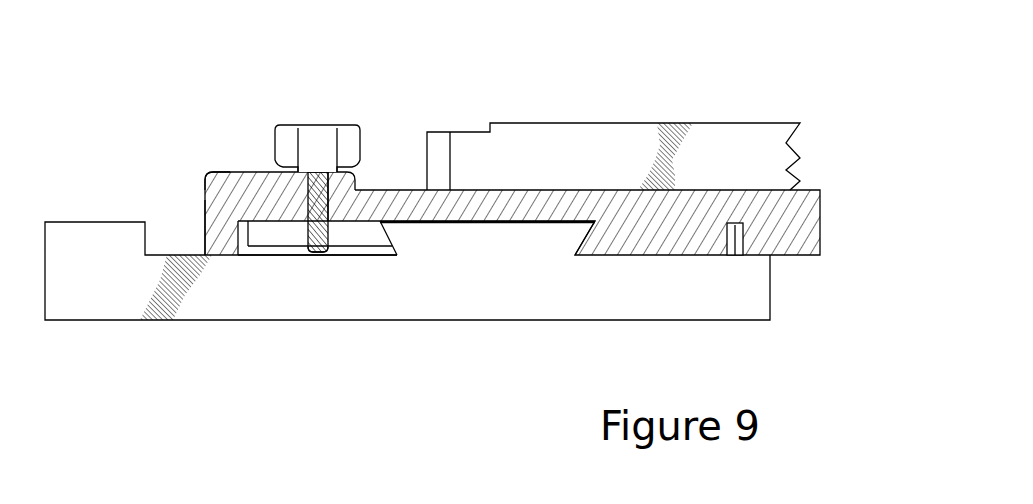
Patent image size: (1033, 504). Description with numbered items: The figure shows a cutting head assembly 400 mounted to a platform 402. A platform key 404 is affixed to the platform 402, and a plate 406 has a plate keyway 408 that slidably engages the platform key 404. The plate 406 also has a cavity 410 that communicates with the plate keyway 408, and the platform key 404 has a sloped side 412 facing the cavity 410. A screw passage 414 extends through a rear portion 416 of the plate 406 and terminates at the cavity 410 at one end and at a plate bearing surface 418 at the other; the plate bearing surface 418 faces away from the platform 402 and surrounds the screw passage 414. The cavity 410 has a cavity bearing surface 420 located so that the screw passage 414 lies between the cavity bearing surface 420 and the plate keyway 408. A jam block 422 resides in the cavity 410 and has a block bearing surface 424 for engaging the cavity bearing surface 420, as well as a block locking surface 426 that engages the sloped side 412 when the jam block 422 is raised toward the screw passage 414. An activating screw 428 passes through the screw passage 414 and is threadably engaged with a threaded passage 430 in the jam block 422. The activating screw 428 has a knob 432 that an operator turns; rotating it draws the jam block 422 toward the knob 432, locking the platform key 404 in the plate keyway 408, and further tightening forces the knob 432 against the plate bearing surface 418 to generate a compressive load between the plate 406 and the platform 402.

The cutting head assembly 400 is at (504, 73).
The platform 402 is at (105, 313).
The platform key 404 is at (470, 219).
The plate 406 is at (177, 182).
The plate keyway 408 is at (525, 220).
The cavity 410 is at (242, 247).
The sloped side 412 is at (400, 243).
The screw passage 414 is at (329, 200).
The rear portion 416 is at (207, 172).
The plate bearing surface 418 is at (303, 172).
The cavity bearing surface 420 is at (242, 232).
The jam block 422 is at (267, 258).
The block bearing surface 424 is at (248, 224).
The block locking surface 426 is at (384, 229).
The activating screw 428 is at (317, 254).
The threaded passage 430 is at (307, 245).
The knob 432 is at (278, 128).